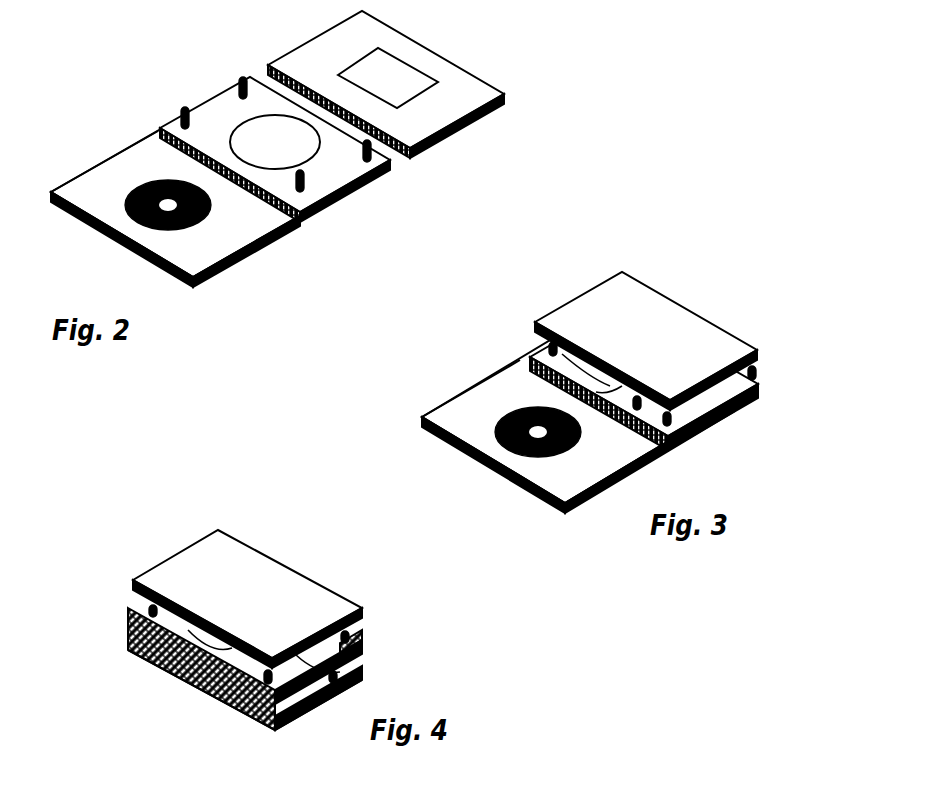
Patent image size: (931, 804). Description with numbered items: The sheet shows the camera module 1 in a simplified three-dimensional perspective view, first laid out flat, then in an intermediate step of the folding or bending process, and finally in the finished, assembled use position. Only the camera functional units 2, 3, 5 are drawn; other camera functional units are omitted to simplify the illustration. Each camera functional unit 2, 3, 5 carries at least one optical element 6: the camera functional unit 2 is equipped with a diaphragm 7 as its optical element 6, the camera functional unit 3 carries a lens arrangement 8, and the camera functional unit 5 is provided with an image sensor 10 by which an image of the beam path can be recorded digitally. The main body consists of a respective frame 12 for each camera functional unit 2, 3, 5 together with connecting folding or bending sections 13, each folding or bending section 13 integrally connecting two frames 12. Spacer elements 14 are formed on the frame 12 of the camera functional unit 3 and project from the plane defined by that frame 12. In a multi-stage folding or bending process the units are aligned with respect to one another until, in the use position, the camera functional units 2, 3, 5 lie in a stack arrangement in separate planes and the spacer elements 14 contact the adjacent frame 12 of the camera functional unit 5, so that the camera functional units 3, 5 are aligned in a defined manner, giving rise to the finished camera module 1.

In FIG. 2, the camera module 1 is at (286, 177).
In FIG. 3, the camera module 1 is at (623, 385).
In FIG. 4, the camera module 1 is at (237, 649).
In FIG. 2, the camera functional unit 2 is at (249, 302).
In FIG. 3, the camera functional unit 2 is at (531, 508).
In FIG. 4, the camera functional unit 2 is at (384, 673).
In FIG. 2, the camera functional unit 3 is at (379, 226).
In FIG. 3, the camera functional unit 3 is at (721, 436).
In FIG. 4, the camera functional unit 3 is at (382, 641).
In FIG. 2, the camera functional unit 5 is at (493, 144).
In FIG. 3, the camera functional unit 5 is at (703, 298).
In FIG. 4, the camera functional unit 5 is at (100, 594).
In FIG. 2, the optical element 6 is at (452, 61).
In FIG. 3, the optical element 6 is at (637, 400).
In FIG. 4, the optical element 6 is at (220, 705).
In FIG. 2, the diaphragm 7 is at (162, 186).
In FIG. 3, the diaphragm 7 is at (527, 456).
In FIG. 2, the lens arrangement 8 is at (272, 128).
In FIG. 3, the lens arrangement 8 is at (522, 368).
In FIG. 4, the lens arrangement 8 is at (136, 656).
In FIG. 2, the image sensor 10 is at (388, 72).
In FIG. 2, the frame 12 is at (447, 122).
In FIG. 3, the frame 12 is at (720, 333).
In FIG. 4, the frame 12 is at (300, 592).
In FIG. 2, the folding or bending section 13 is at (398, 152).
In FIG. 3, the folding or bending section 13 is at (656, 452).
In FIG. 4, the folding or bending section 13 is at (356, 636).
In FIG. 2, the spacer element 14 is at (187, 107).
In FIG. 3, the spacer element 14 is at (545, 348).
In FIG. 4, the spacer element 14 is at (151, 602).